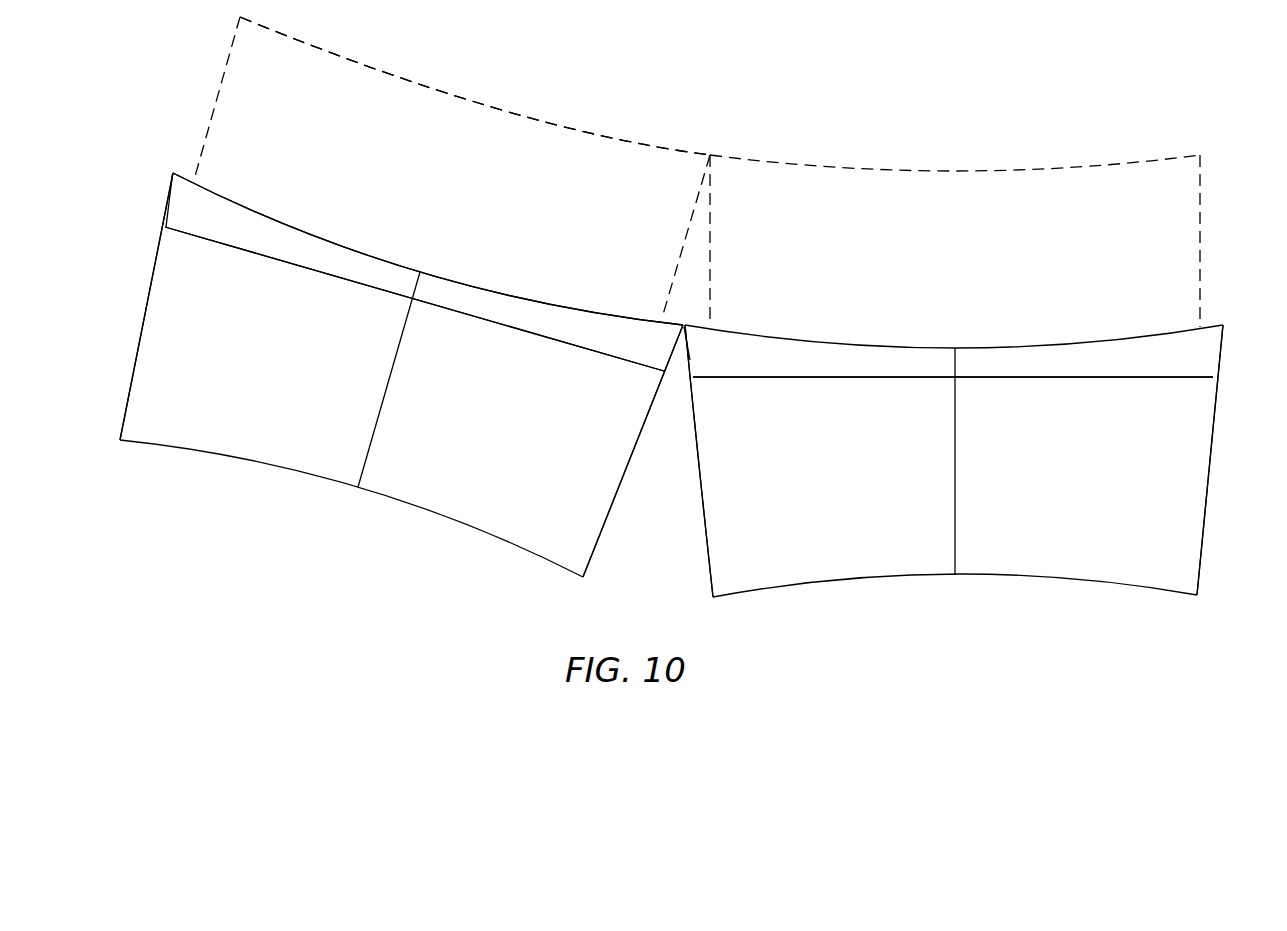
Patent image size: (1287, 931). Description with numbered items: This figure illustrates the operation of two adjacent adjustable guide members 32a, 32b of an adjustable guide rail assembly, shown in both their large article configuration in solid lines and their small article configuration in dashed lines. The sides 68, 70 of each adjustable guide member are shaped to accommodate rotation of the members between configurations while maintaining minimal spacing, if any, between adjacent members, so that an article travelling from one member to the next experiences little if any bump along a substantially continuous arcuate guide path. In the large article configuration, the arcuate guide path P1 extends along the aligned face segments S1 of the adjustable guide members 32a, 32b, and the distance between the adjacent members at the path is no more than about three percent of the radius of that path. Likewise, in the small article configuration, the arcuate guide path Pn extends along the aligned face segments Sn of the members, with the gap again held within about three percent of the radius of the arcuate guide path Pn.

The adjustable guide member 32a is at (327, 510).
The adjustable guide member 32b is at (978, 603).
The side of adjustable guide member 68 is at (125, 402).
The side of adjustable guide member 70 is at (600, 550).
The aligned face segments S1 is at (1053, 343).
The aligned face segments Sn is at (1055, 165).
The arcuate guide path P1 is at (518, 294).
The arcuate guide path Pn is at (580, 127).